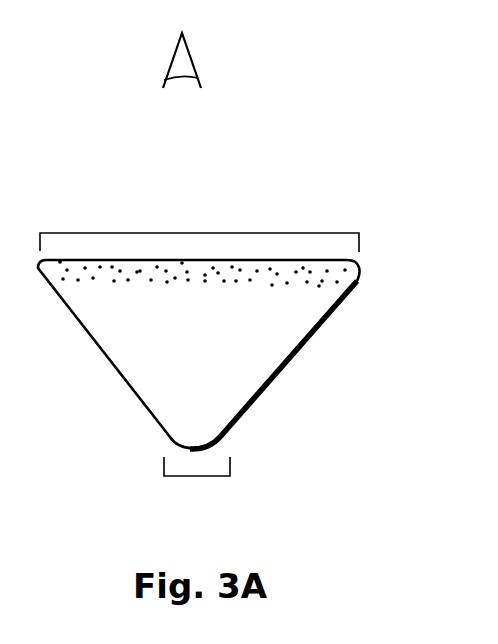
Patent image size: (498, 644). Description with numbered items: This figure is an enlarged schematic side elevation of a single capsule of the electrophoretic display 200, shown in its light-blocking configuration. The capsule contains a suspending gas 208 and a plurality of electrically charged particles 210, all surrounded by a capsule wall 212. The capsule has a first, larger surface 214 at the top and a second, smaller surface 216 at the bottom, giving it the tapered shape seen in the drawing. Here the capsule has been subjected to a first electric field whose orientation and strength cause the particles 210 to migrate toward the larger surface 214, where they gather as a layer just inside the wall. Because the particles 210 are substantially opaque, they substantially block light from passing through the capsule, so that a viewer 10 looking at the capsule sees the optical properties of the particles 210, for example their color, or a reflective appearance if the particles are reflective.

The viewer 10 is at (190, 54).
The electrophoretic display 200 is at (227, 303).
The suspending gas 208 is at (278, 355).
The electrically charged particles 210 is at (348, 270).
The capsule wall 212 is at (87, 333).
The first, larger surface 214 is at (225, 231).
The second, smaller surface 216 is at (193, 477).